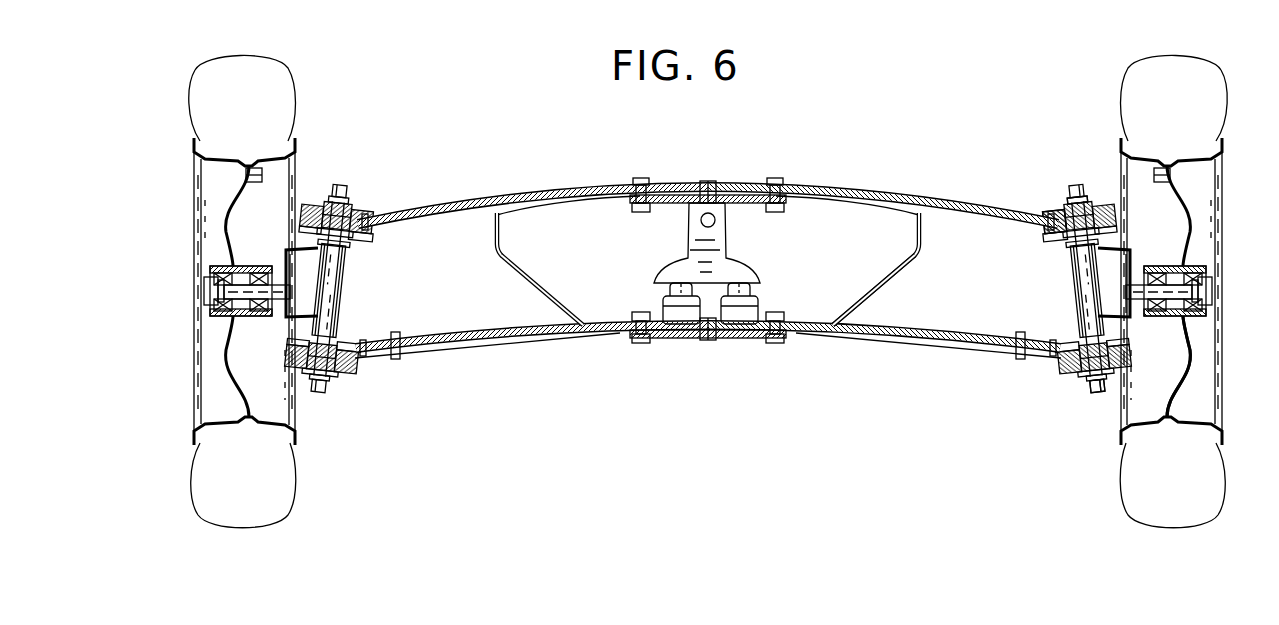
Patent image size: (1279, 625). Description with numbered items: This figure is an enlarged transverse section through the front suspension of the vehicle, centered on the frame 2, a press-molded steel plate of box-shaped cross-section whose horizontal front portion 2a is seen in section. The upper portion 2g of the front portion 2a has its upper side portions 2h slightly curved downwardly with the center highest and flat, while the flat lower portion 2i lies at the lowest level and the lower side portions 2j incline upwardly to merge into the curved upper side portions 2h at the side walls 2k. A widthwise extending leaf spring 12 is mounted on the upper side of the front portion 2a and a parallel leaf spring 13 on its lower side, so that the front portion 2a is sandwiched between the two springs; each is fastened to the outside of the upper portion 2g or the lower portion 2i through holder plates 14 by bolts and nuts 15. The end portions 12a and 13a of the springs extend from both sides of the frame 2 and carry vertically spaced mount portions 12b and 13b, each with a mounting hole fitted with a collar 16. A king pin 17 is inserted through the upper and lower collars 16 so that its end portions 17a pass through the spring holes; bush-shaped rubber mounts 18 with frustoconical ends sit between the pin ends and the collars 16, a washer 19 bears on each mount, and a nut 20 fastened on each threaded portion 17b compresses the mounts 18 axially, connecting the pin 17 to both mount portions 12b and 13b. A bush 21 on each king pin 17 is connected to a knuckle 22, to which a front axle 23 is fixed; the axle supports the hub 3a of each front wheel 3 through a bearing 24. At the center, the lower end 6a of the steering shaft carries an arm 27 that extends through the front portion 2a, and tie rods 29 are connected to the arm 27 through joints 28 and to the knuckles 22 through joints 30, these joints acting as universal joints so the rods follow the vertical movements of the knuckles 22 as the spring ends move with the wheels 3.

The frame 2 is at (906, 283).
The horizontal front portion 2a is at (905, 205).
The upper portion 2g is at (672, 194).
The upper side portions 2h is at (540, 192).
The flat lower portion 2i is at (675, 345).
The lower side portions 2j is at (540, 292).
The side walls 2k is at (495, 240).
The front wheels 3 is at (255, 512).
The hub 3a is at (232, 270).
The lower end of steering shaft 6a is at (700, 222).
The leaf spring 12 is at (580, 190).
The end portions of leaf spring 12a is at (457, 206).
The mount portions 12b is at (312, 212).
The leaf spring 13 is at (530, 340).
The end portions of leaf spring 13a is at (425, 347).
The mount portions 13b is at (298, 348).
The holder plates 14 is at (714, 190).
The bolts and nuts 15 is at (641, 180).
The collars 16 is at (368, 222).
The king pin 17 is at (336, 292).
The end portions of king pin 17a is at (1182, 335).
The threaded portions 17b is at (1165, 410).
The rubber mounts 18 is at (355, 210).
The washer 19 is at (340, 194).
The nut 20 is at (348, 190).
The bush 21 is at (350, 278).
The knuckle 22 is at (288, 252).
The front axle 23 is at (212, 280).
The bearing 24 is at (210, 294).
The arm 27 is at (727, 258).
The joints 28 is at (665, 297).
The tie rods 29 is at (475, 352).
The joints 30 is at (395, 362).